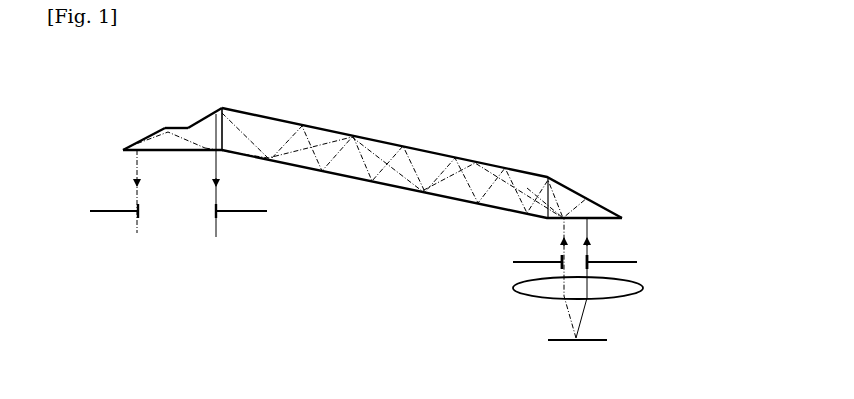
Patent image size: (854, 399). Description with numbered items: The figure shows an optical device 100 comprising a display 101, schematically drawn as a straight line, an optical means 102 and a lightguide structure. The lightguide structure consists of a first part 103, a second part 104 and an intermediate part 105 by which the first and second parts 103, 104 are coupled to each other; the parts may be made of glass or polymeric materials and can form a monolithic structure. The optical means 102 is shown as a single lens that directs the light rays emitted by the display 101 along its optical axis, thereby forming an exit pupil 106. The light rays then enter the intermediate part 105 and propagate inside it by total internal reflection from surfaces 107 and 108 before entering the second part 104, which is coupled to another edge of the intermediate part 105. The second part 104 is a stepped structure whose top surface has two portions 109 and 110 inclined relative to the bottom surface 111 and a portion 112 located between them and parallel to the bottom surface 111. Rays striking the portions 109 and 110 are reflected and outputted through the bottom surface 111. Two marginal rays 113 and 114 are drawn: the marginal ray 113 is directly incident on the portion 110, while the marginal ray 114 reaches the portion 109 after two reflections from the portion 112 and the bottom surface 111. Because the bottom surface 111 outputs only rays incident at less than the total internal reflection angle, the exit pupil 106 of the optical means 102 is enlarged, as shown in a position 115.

The optical device 100 is at (540, 92).
The display 101 is at (570, 343).
The optical means 102 is at (633, 287).
The first part 103 is at (590, 195).
The second part 104 is at (178, 138).
The intermediate part 105 is at (440, 153).
The exit pupil 106 is at (623, 262).
The surface 107 is at (328, 125).
The surface 108 is at (393, 187).
The portion 109 is at (132, 143).
The portion 110 is at (205, 118).
The bottom surface 111 is at (150, 147).
The portion 112 is at (173, 130).
The marginal ray 113 is at (223, 120).
The marginal ray 114 is at (221, 151).
The position 115 is at (248, 213).